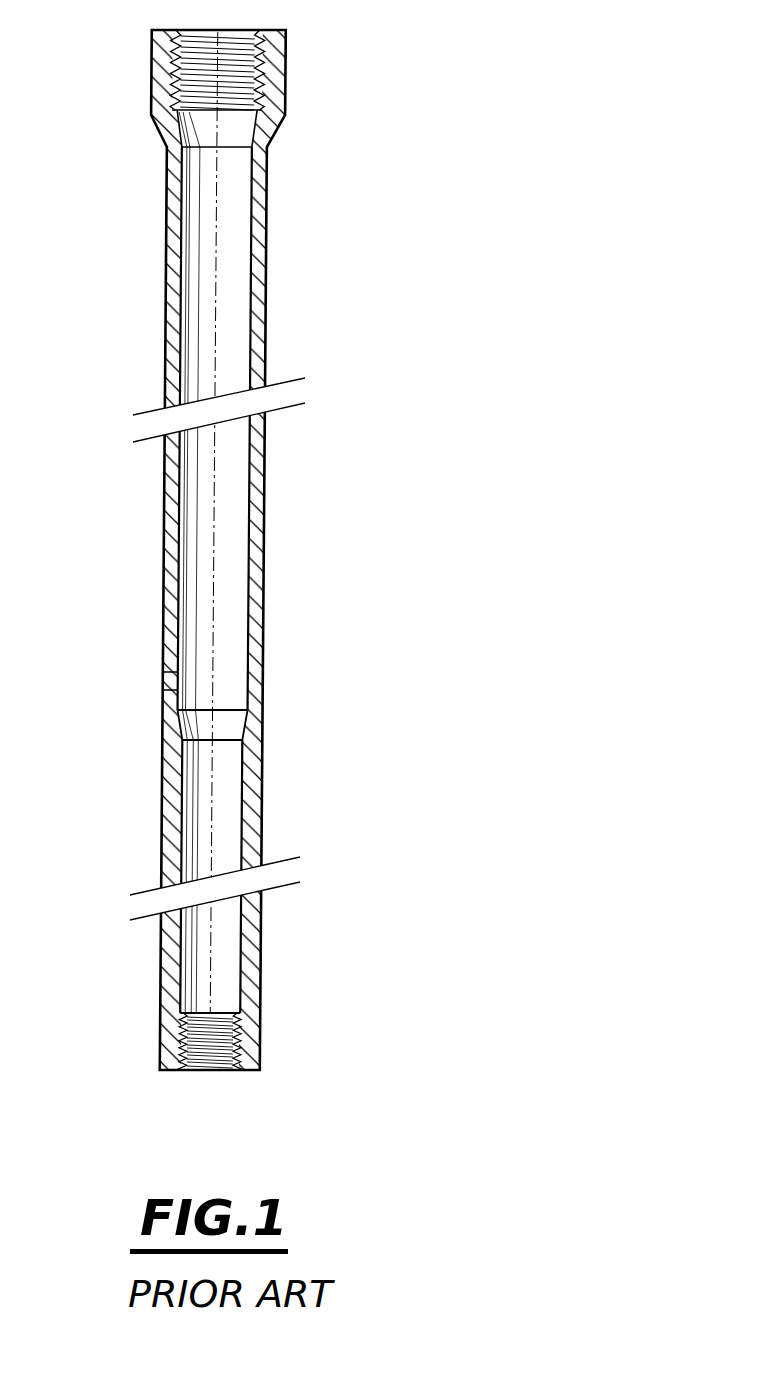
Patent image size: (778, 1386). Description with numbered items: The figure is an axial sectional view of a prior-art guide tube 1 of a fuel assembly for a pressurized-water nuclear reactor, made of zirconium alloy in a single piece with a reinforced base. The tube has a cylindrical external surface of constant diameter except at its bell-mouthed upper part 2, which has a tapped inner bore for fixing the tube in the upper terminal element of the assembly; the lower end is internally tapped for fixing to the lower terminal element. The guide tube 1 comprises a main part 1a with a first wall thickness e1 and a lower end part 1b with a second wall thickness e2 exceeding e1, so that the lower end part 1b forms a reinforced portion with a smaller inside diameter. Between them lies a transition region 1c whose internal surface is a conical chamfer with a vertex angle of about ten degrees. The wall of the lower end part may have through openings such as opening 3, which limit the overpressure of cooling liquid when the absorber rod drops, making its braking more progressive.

The guide tube 1 is at (336, 550).
The main part 1a is at (266, 287).
The lower end part 1b is at (257, 955).
The transition region 1c is at (258, 730).
The upper part 2 is at (285, 72).
The through opening 3 is at (175, 683).
The first wall thickness e1 is at (180, 553).
The second wall thickness e2 is at (183, 825).